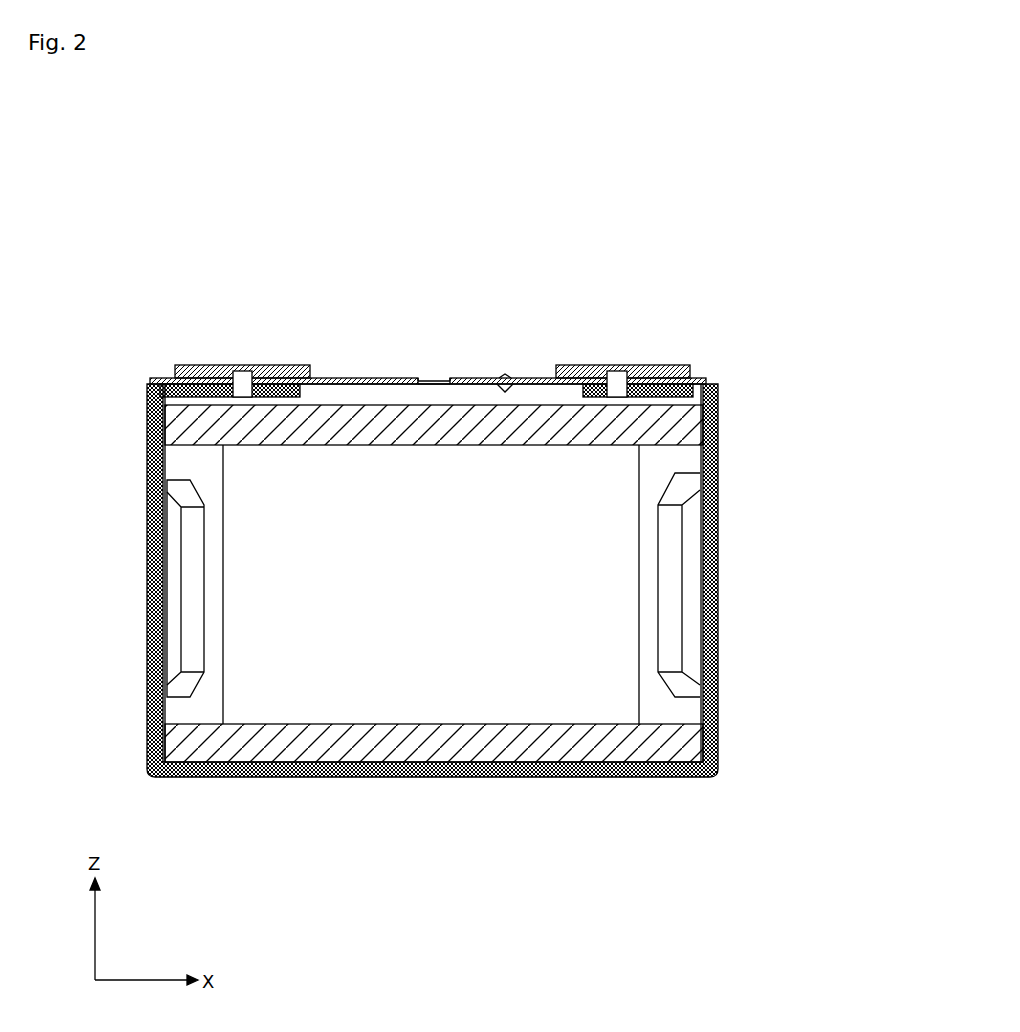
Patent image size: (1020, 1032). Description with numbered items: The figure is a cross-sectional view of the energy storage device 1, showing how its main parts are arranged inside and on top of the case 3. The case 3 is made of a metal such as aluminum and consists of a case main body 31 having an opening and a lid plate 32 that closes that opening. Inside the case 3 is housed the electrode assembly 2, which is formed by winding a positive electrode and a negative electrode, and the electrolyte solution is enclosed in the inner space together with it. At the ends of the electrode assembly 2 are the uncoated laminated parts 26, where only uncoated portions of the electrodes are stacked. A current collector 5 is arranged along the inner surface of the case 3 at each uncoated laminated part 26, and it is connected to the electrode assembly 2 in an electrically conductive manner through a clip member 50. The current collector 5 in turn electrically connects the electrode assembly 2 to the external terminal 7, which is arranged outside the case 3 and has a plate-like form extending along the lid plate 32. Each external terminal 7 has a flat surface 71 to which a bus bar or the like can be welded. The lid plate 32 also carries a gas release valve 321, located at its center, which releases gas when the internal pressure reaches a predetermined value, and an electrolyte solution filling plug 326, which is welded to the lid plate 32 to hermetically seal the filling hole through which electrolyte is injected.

The energy storage device 1 is at (713, 244).
The electrode assembly 2 is at (478, 777).
The case 3 is at (812, 391).
The case main body 31 is at (716, 443).
The lid plate 32 is at (703, 367).
The gas release valve 321 is at (428, 378).
The electrolyte solution filling plug 326 is at (505, 378).
The external terminal 7 is at (228, 364).
The surface 71 is at (268, 364).
The uncoated laminated part 26 is at (208, 708).
The current collector 5 is at (177, 627).
The clip member 50 is at (198, 551).